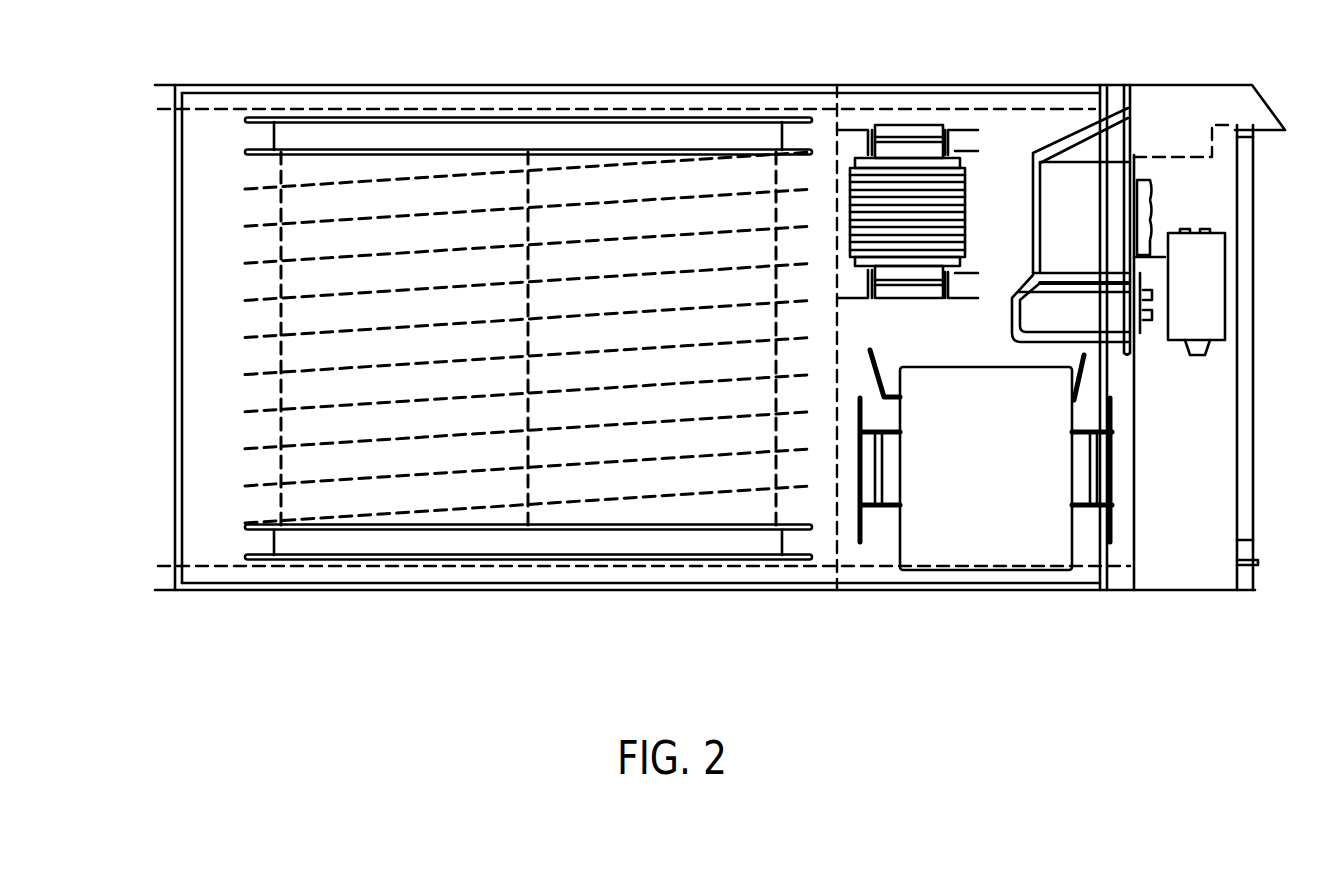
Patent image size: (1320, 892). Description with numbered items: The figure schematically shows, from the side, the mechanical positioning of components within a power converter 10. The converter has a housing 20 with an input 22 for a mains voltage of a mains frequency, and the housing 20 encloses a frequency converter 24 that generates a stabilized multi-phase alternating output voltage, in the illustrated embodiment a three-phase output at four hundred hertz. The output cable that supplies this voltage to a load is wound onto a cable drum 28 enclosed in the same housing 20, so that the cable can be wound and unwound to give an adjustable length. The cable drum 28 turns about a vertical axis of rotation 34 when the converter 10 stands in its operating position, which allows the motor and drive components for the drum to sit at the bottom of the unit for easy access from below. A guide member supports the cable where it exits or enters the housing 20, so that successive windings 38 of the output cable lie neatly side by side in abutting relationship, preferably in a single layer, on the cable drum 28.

The power converter 10 is at (638, 68).
The housing 20 is at (352, 592).
The input 22 is at (1183, 572).
The frequency converter 24 is at (1005, 150).
The cable drum 28 is at (453, 135).
The vertical axis of rotation 34 is at (530, 478).
The windings 38 is at (255, 468).